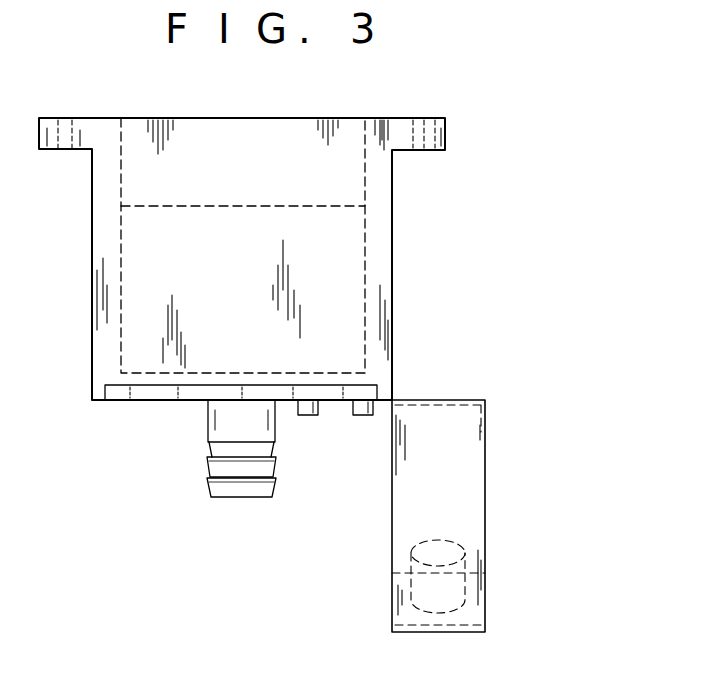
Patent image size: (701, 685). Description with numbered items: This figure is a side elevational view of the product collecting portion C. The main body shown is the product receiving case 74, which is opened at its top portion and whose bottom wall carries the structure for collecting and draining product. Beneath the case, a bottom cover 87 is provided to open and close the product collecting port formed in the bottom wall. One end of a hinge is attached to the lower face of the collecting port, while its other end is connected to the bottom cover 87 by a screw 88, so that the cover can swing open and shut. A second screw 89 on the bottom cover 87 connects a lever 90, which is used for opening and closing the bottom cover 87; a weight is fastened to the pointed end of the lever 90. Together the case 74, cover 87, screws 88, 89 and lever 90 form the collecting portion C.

The product receiving case 74 is at (380, 283).
The bottom cover 87 is at (145, 402).
The screw 88 is at (315, 416).
The screw 89 is at (363, 416).
The lever 90 is at (470, 482).
The product collecting portion C is at (515, 128).